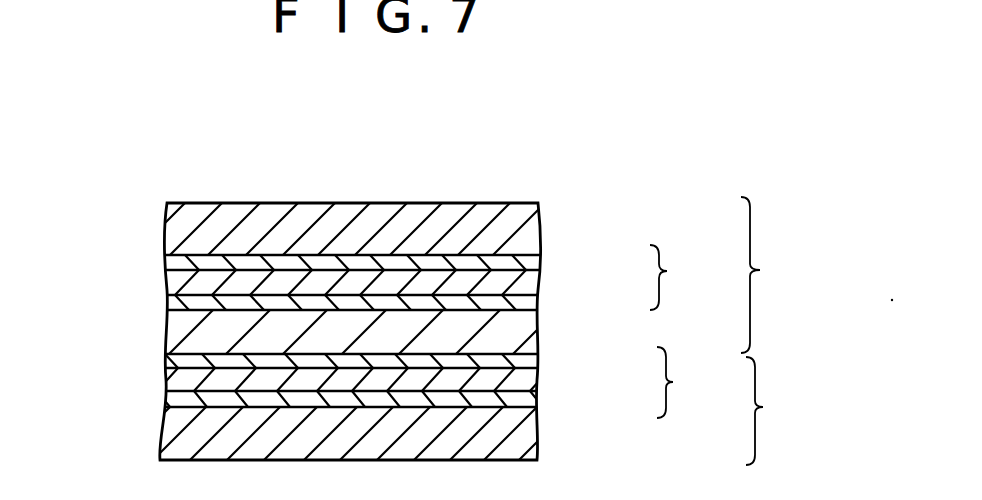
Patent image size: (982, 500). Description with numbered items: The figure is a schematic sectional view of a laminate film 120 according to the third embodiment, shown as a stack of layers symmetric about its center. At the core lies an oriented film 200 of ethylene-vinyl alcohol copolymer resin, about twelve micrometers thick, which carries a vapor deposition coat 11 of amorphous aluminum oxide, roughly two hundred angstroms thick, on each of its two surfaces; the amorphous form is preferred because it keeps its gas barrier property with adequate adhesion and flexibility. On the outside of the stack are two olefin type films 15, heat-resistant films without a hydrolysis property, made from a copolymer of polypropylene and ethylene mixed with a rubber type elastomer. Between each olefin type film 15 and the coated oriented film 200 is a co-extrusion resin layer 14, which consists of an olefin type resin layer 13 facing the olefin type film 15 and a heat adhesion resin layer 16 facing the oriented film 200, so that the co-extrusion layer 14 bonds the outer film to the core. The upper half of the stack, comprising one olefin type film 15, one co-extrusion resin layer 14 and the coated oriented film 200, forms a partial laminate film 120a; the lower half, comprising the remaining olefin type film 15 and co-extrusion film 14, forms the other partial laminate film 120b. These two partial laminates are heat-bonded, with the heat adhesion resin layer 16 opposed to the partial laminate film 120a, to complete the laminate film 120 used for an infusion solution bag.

The laminate film 120 is at (439, 198).
The partial laminate film 120a is at (793, 275).
The partial laminate film 120b is at (801, 411).
The olefin type film 15 is at (537, 232).
The co-extrusion resin layer 14 is at (684, 331).
The olefin type resin layer 13 is at (538, 262).
The heat adhesion resin layer 16 is at (538, 287).
The vapor deposition coat 11 is at (167, 307).
The oriented film 200 is at (167, 337).